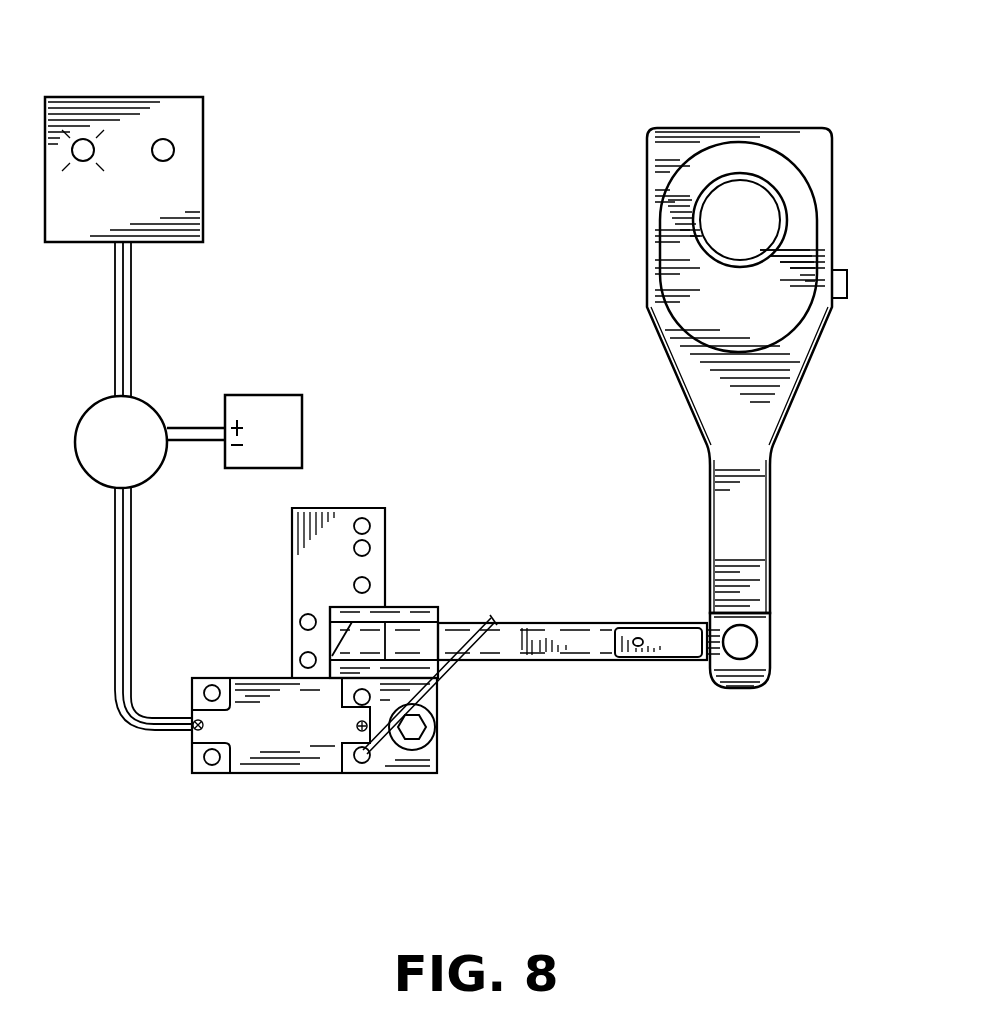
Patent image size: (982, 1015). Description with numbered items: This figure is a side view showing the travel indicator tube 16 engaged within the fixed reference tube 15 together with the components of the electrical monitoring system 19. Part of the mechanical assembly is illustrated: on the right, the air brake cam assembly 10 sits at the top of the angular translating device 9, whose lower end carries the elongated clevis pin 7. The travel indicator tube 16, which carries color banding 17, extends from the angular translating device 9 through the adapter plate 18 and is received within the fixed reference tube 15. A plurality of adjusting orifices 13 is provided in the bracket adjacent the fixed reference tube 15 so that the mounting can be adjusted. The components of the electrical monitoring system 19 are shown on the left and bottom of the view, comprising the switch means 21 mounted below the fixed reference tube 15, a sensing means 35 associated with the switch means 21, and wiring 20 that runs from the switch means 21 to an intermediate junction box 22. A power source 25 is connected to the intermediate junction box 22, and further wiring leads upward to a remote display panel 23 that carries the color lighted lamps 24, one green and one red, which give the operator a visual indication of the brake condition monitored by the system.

The elongated clevis pin 7 is at (748, 638).
The angular translating device 9 is at (815, 348).
The air brake cam assembly 10 is at (755, 220).
The adjusting orifices 13 is at (366, 543).
The fixed reference tube 15 is at (405, 607).
The travel indicator tube 16 is at (532, 622).
The color banding 17 is at (412, 638).
The adapter plate 18 is at (665, 645).
The electrical monitoring system 19 is at (139, 315).
The wiring 20 is at (193, 445).
The switch means 21 is at (425, 775).
The intermediate junction box 22 is at (138, 397).
The remote display panel 23 is at (203, 152).
The color lighted lamps 24 is at (161, 140).
The power source 25 is at (265, 395).
The sensing means 35 is at (447, 662).